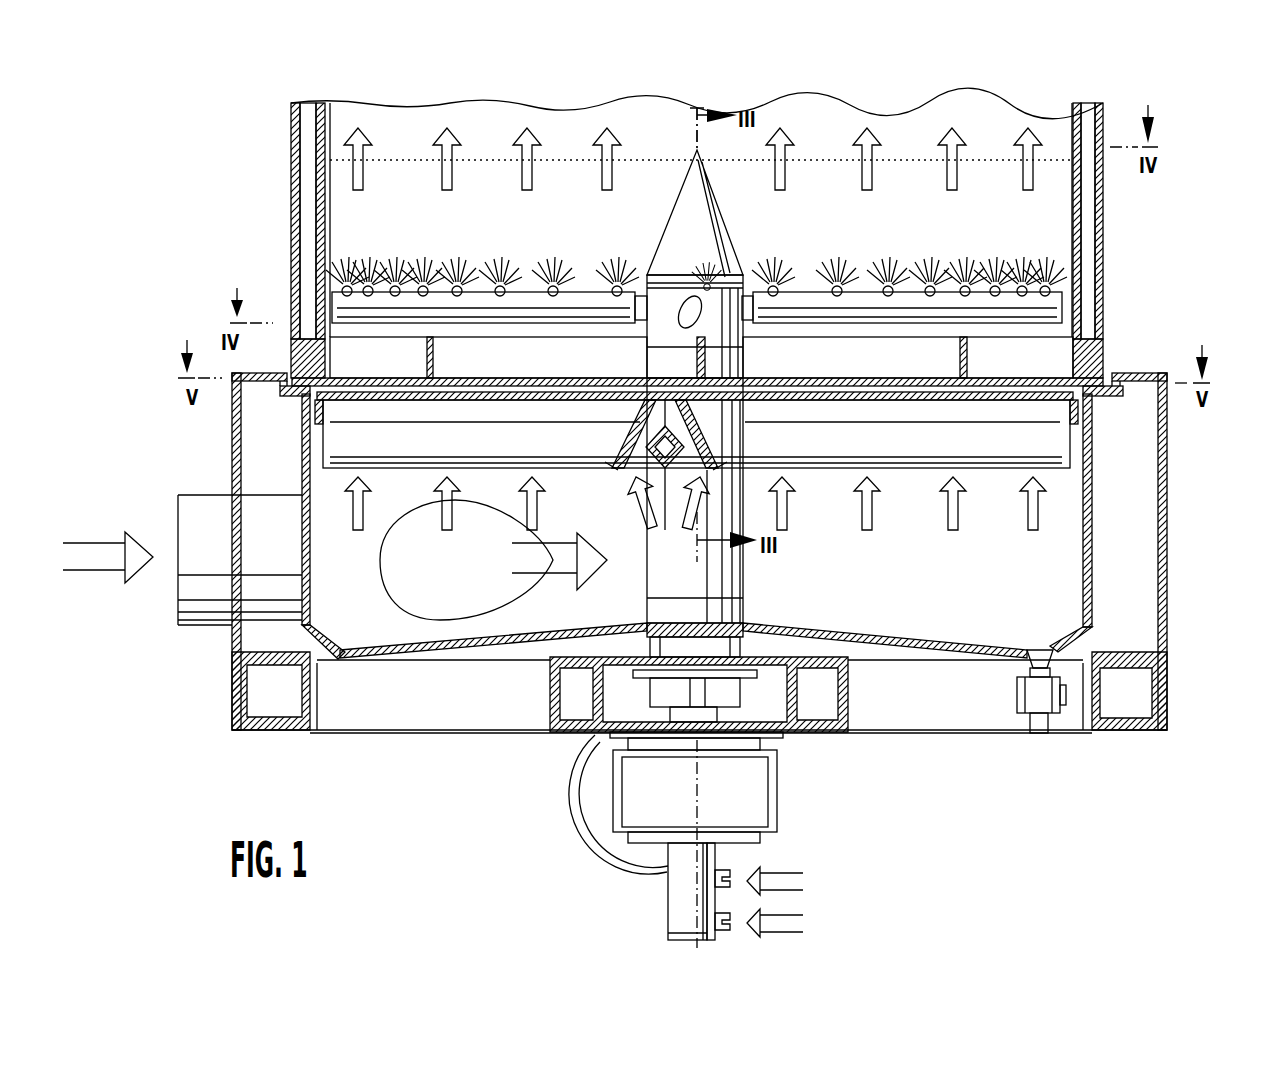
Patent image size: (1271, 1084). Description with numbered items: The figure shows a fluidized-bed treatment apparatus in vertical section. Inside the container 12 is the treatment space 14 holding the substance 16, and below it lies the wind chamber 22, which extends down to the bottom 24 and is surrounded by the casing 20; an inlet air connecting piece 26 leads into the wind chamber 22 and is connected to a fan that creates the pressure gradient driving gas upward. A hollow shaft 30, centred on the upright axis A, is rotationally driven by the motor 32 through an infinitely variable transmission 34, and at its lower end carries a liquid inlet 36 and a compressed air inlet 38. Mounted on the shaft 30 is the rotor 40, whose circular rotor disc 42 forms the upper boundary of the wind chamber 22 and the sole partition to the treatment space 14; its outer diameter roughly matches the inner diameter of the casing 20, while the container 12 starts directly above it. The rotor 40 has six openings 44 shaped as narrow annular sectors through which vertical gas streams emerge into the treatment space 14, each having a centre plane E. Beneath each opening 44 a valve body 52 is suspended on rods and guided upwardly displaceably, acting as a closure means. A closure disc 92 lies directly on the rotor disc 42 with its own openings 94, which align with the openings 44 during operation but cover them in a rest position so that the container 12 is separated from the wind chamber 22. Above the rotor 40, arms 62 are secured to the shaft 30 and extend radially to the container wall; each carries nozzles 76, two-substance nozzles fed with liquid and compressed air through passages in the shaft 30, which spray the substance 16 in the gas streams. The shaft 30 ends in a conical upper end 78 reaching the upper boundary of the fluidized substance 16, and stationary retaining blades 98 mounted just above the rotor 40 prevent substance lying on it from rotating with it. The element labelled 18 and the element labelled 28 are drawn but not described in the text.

The container 12 is at (270, 228).
The treatment space 14 is at (352, 165).
The substance 16 is at (495, 205).
The spray nozzles 18 is at (616, 264).
The casing 20 is at (1083, 585).
The wind chamber 22 is at (858, 603).
The bottom 24 is at (950, 638).
The inlet air connecting piece 26 is at (207, 507).
The drain valve 28 is at (1027, 697).
The hollow shaft 30 is at (660, 577).
The motor 32 is at (596, 820).
The infinitely variable transmission 34 is at (755, 805).
The liquid inlet 36 is at (725, 920).
The compressed air inlet 38 is at (725, 870).
The rotor 40 is at (890, 476).
The rotor disc 42 is at (888, 397).
The openings 44 is at (680, 408).
The valve body 52 is at (650, 444).
The arms 62 is at (812, 298).
The nozzles 76 is at (955, 290).
The conical upper end 78 is at (690, 188).
The closure disc 92 is at (828, 397).
The openings 94 is at (633, 410).
The retaining blades 98 is at (322, 362).
The axis A is at (695, 905).
The centre plane E is at (667, 505).